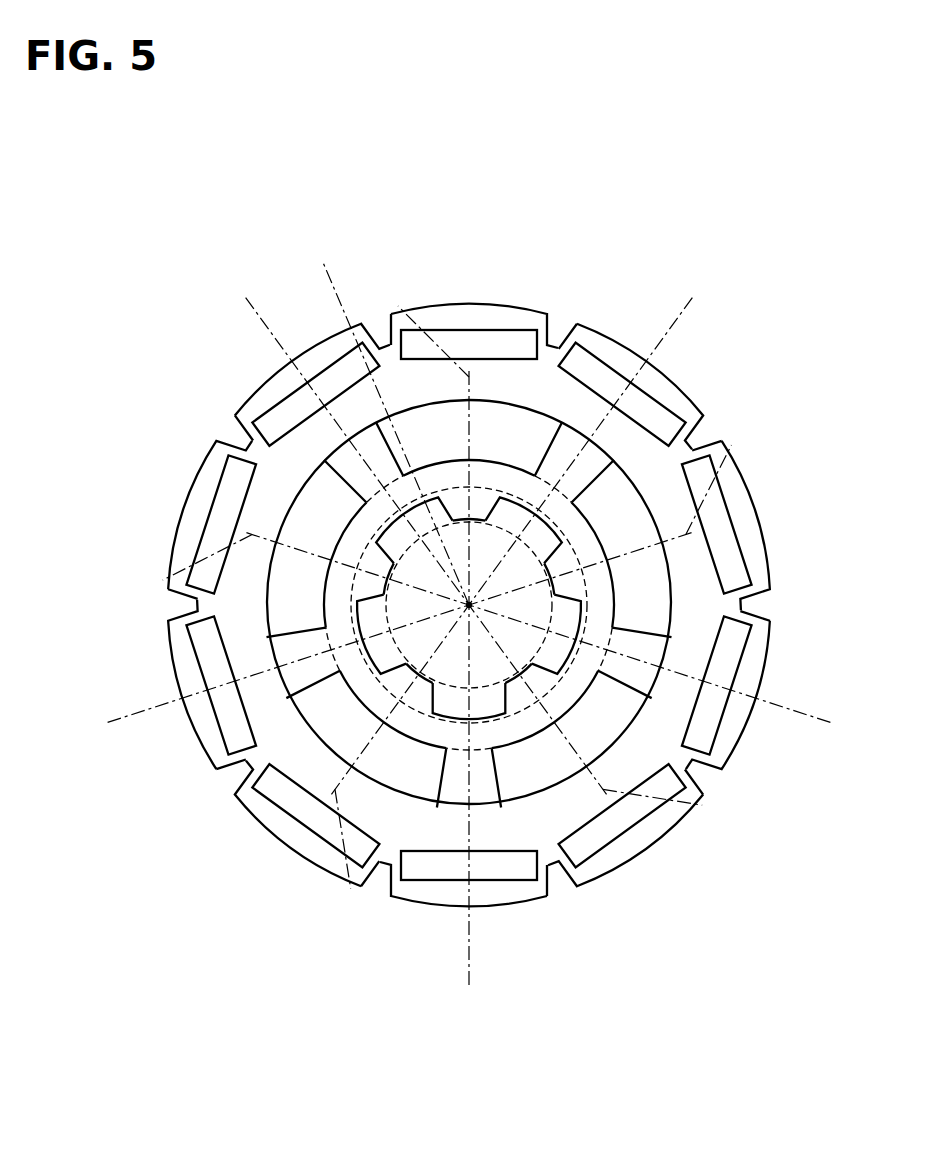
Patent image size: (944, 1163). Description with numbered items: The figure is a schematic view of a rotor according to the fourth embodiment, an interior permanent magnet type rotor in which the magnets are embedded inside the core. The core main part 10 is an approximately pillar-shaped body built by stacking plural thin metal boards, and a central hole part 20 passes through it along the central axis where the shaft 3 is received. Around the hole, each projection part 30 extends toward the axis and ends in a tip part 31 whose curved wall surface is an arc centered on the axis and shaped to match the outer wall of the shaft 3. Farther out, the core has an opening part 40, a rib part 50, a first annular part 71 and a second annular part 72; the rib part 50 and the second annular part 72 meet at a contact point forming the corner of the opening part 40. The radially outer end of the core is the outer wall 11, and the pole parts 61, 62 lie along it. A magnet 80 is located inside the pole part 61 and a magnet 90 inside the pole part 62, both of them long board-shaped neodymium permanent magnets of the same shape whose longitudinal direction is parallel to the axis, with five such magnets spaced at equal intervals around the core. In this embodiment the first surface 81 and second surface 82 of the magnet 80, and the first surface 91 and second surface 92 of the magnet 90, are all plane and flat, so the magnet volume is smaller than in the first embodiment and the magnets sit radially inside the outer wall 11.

The shaft 3 is at (468, 614).
The core main part 10 is at (550, 293).
The outer wall 11 is at (605, 299).
The central hole part 20 is at (469, 602).
The projection part 30 is at (473, 594).
The tip part 31 is at (469, 555).
The opening part 40 is at (470, 602).
The rib part 50 is at (467, 607).
The pole part 61 is at (471, 569).
The pole part 62 is at (460, 644).
The first annular part 71 is at (460, 743).
The second annular part 72 is at (397, 903).
The magnet 80 is at (459, 575).
The first surface 81 is at (480, 584).
The second surface 82 is at (487, 586).
The magnet 90 is at (480, 627).
The first surface 91 is at (465, 622).
The second surface 92 is at (462, 631).